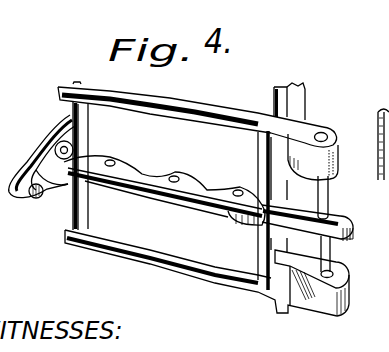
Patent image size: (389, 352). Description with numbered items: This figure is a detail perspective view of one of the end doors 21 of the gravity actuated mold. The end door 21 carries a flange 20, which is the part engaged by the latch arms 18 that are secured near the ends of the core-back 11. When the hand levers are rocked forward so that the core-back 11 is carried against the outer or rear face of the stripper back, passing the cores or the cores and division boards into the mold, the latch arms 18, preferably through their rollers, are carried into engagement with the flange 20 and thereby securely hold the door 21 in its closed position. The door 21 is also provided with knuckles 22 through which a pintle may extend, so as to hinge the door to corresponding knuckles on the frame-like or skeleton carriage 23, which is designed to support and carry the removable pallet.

The core-back 11 is at (45, 128).
The latch arms 18 is at (120, 172).
The flanges 20 is at (338, 246).
The end doors 21 is at (207, 140).
The knuckles 22 is at (297, 127).
The skeleton carriage 23 is at (287, 86).